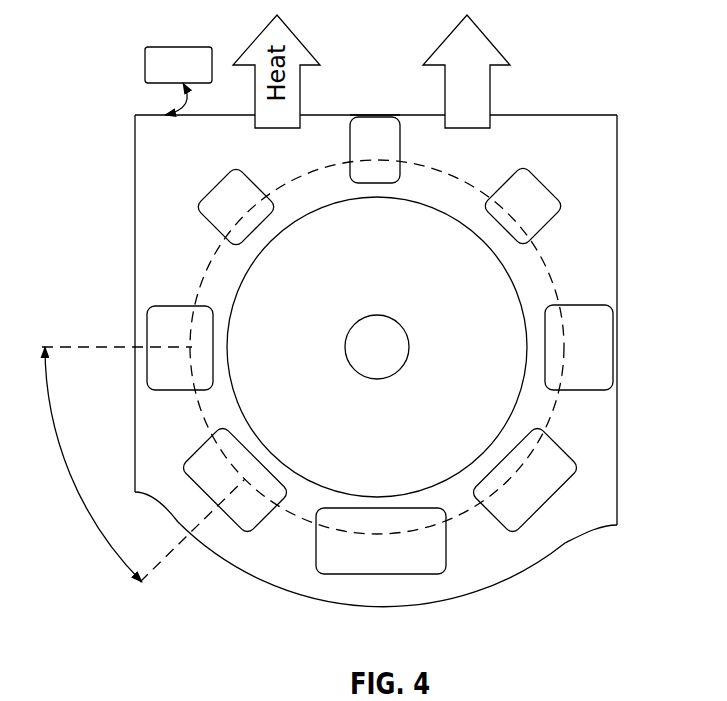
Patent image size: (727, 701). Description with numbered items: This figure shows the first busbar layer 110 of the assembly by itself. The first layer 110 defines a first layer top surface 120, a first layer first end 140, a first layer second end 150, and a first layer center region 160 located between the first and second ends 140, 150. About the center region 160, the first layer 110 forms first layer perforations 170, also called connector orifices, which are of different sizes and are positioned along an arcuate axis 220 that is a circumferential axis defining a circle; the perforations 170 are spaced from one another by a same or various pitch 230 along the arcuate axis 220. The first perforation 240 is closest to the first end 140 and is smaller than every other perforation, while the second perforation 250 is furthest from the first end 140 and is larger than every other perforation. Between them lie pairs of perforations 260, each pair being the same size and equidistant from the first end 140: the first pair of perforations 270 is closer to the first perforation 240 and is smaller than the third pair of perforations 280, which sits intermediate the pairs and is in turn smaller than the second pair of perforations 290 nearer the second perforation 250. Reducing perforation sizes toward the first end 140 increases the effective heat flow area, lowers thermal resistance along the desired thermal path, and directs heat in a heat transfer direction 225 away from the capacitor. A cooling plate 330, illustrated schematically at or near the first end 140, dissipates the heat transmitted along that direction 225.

The first busbar layer 110 is at (617, 115).
The first layer top surface 120 is at (612, 265).
The first layer first end 140 is at (540, 115).
The first layer second end 150 is at (407, 608).
The first layer center region 160 is at (147, 248).
The first layer perforations 170 is at (604, 353).
The arcuate axis 220 is at (558, 417).
The heat transfer direction 225 is at (500, 50).
The pitch 230 is at (78, 490).
The first perforation 240 is at (383, 117).
The second perforation 250 is at (415, 563).
The pairs of perforations 260 is at (201, 194).
The first pair of perforations 270 is at (250, 230).
The third pair of perforations 280 is at (214, 342).
The second pair of perforations 290 is at (252, 457).
The cooling plate 330 is at (175, 47).